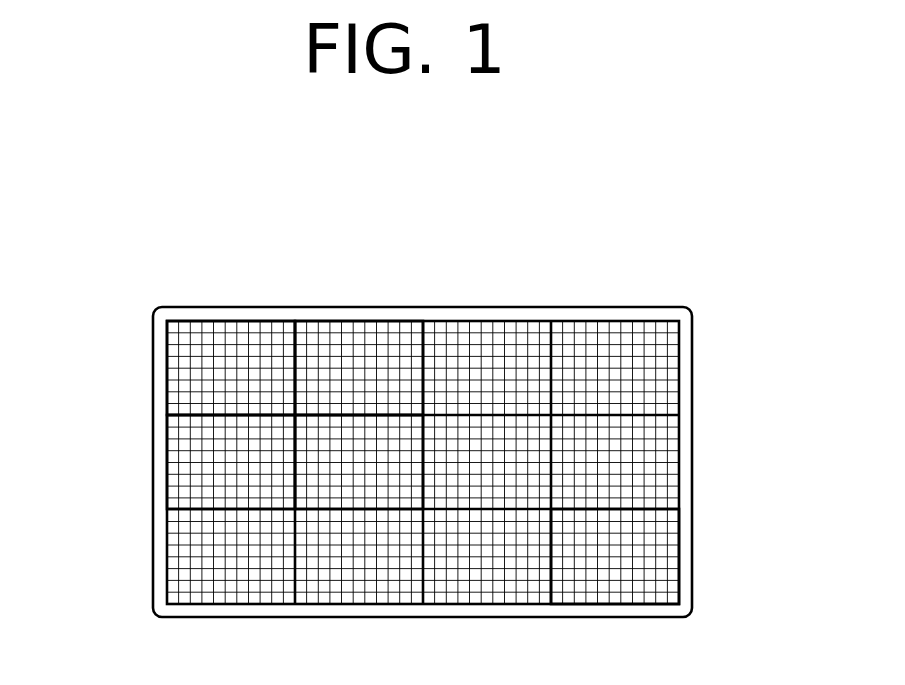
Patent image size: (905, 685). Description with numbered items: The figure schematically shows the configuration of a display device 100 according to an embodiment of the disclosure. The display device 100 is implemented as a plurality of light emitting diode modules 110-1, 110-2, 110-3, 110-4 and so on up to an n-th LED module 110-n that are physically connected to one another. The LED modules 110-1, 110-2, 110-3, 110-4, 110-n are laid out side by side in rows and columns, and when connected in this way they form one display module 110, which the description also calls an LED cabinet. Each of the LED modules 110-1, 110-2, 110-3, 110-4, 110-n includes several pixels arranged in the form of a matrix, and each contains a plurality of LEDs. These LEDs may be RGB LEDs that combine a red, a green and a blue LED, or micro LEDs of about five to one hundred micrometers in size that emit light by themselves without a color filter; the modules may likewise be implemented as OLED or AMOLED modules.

The display device 100 is at (432, 188).
The display module 110 is at (672, 307).
The LED module 110-1 is at (209, 321).
The LED module 110-2 is at (336, 321).
The LED module 110-3 is at (167, 457).
The LED module 110-4 is at (295, 490).
The LED module 110-n is at (679, 554).